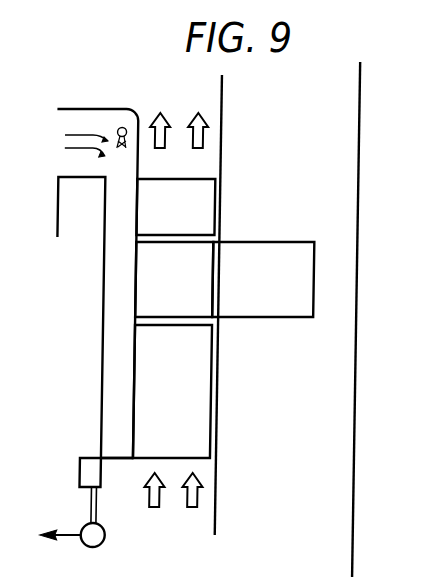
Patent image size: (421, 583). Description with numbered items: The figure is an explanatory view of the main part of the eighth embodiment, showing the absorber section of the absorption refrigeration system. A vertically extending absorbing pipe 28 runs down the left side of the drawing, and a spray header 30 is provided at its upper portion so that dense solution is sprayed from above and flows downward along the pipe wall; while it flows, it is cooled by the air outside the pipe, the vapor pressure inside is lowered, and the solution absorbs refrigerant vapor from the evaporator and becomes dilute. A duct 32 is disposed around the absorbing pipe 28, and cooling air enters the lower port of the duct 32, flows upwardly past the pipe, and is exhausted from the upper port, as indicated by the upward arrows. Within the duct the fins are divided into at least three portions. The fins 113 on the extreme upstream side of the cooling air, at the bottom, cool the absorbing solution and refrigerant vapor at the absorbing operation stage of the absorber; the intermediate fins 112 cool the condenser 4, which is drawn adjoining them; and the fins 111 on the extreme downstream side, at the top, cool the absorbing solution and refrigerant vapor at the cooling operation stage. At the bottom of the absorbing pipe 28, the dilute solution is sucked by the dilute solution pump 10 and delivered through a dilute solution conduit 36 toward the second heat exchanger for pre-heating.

The condenser 4 is at (284, 243).
The dilute solution pump 10 is at (110, 533).
The absorbing pipe 28 is at (103, 330).
The spray header 30 is at (120, 128).
The duct 32 is at (219, 472).
The dilute solution conduit 36 is at (74, 538).
The fins 111 is at (196, 185).
The intermediate fins 112 is at (211, 263).
The fins 113 is at (205, 412).